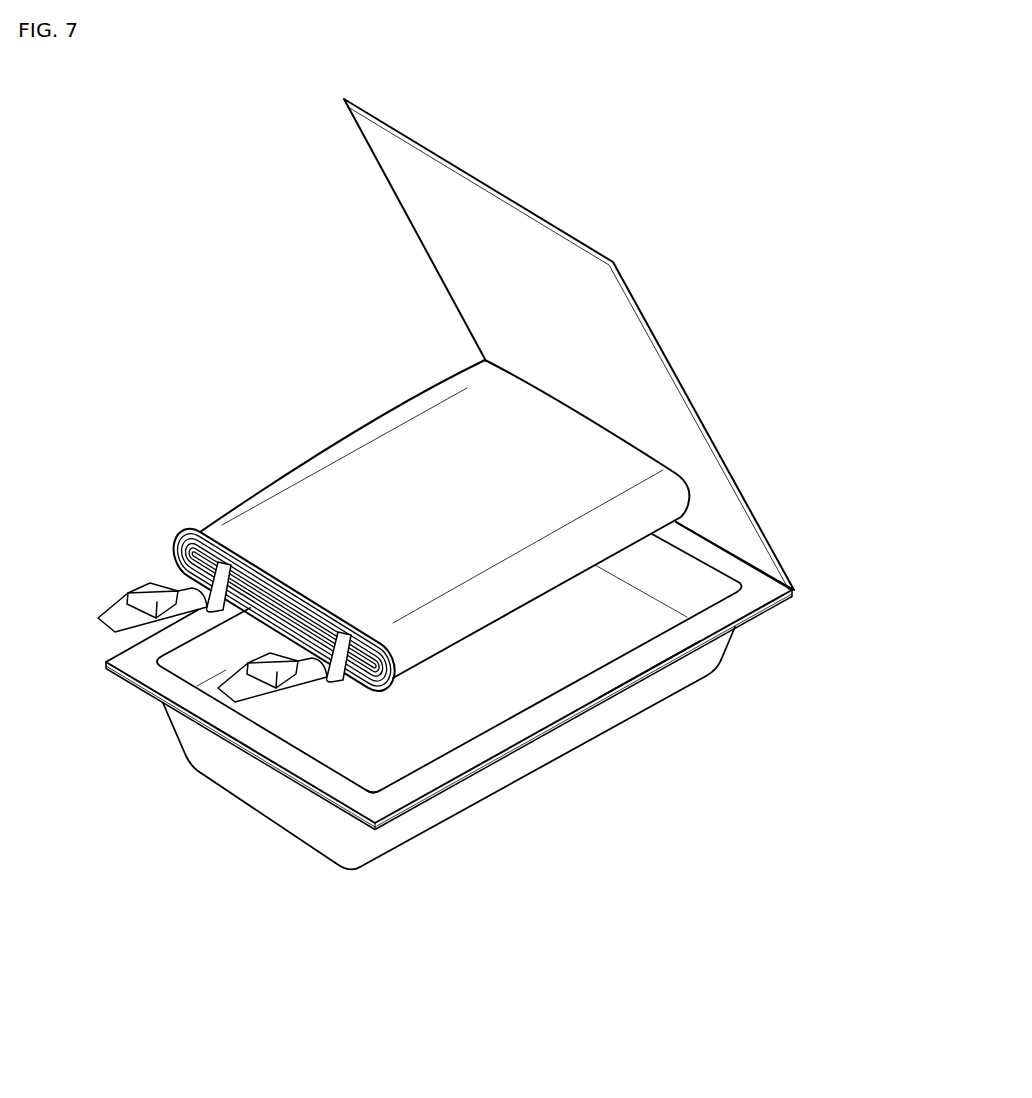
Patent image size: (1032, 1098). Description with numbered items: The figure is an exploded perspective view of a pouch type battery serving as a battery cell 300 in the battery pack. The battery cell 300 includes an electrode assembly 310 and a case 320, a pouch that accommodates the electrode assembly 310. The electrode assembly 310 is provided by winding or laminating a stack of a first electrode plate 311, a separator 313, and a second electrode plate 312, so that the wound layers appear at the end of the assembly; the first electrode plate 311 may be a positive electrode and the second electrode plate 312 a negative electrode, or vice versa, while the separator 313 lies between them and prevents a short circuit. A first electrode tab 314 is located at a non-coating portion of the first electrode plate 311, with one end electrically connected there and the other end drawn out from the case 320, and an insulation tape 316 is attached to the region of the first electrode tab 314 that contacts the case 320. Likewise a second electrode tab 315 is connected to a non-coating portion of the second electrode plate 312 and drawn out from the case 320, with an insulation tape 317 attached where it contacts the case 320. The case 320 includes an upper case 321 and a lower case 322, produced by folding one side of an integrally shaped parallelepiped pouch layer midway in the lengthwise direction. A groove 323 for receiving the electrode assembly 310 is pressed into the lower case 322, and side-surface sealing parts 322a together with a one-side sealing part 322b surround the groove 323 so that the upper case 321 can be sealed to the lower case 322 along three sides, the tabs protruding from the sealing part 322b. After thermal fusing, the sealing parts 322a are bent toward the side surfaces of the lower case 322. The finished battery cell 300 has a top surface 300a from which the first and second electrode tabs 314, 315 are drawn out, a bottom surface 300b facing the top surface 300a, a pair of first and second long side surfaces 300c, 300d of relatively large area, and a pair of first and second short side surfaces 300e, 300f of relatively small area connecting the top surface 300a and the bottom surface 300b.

The battery cell 300 is at (205, 285).
The electrode assembly 310 is at (240, 436).
The first electrode plate 311 is at (189, 526).
The second electrode plate 312 is at (182, 553).
The separator 313 is at (177, 546).
The first electrode tab 314 is at (160, 623).
The second electrode tab 315 is at (341, 686).
The insulation tape 316 is at (143, 592).
The insulation tape 317 is at (276, 674).
The case 320 is at (877, 602).
The upper case 321 is at (760, 568).
The lower case 322 is at (722, 647).
The side-surface sealing part 322a is at (653, 658).
The one-side sealing part 322b is at (363, 800).
The groove 323 is at (500, 698).
The top surface 300a is at (222, 788).
The bottom surface 300b is at (740, 665).
The first long side surface 300c is at (410, 856).
The second long side surface 300d is at (715, 400).
The first short side surface 300e is at (160, 740).
The second short side surface 300f is at (660, 705).